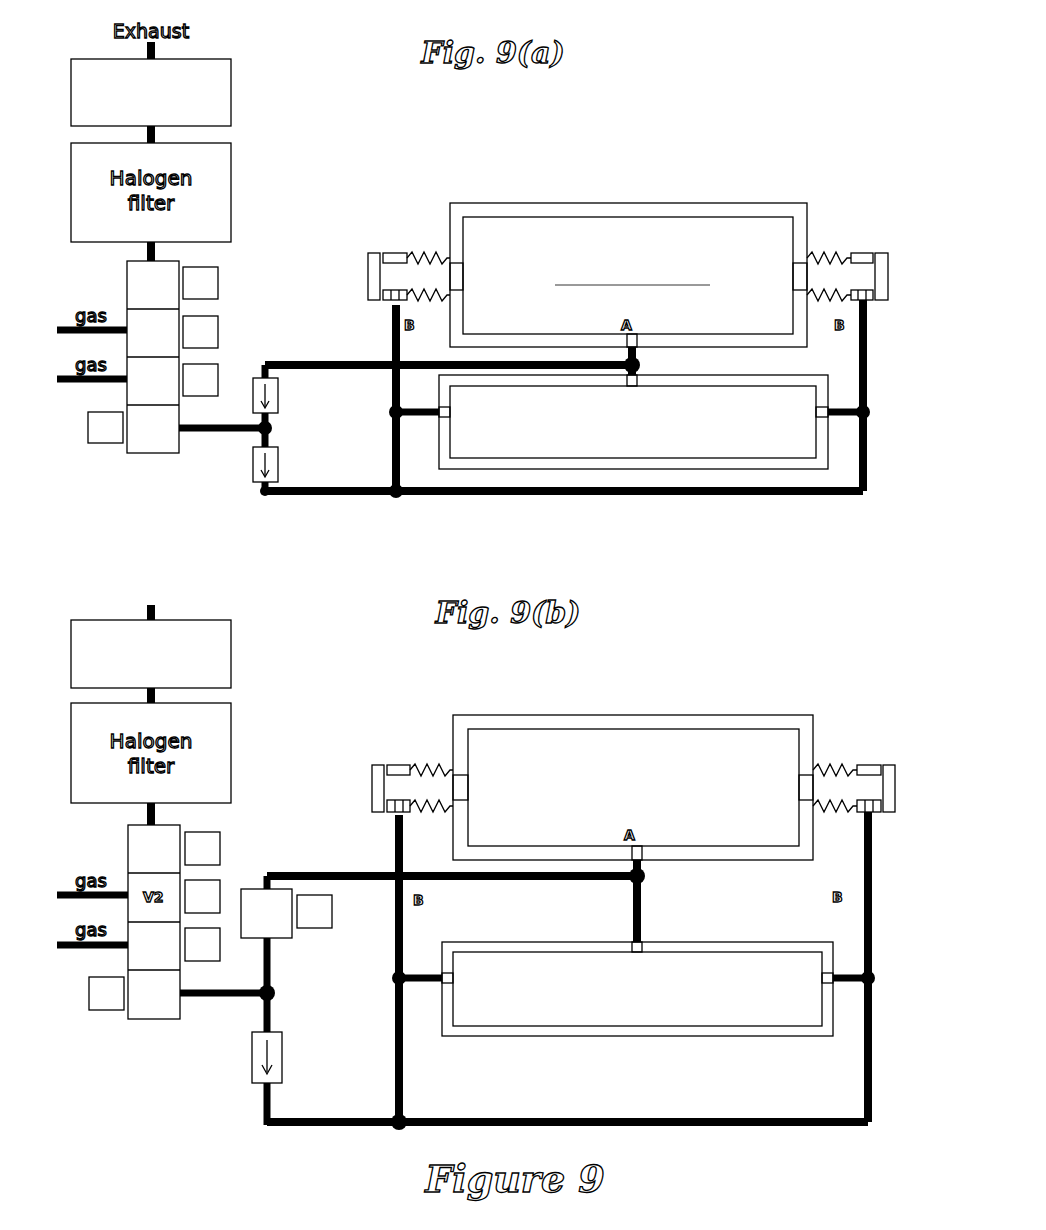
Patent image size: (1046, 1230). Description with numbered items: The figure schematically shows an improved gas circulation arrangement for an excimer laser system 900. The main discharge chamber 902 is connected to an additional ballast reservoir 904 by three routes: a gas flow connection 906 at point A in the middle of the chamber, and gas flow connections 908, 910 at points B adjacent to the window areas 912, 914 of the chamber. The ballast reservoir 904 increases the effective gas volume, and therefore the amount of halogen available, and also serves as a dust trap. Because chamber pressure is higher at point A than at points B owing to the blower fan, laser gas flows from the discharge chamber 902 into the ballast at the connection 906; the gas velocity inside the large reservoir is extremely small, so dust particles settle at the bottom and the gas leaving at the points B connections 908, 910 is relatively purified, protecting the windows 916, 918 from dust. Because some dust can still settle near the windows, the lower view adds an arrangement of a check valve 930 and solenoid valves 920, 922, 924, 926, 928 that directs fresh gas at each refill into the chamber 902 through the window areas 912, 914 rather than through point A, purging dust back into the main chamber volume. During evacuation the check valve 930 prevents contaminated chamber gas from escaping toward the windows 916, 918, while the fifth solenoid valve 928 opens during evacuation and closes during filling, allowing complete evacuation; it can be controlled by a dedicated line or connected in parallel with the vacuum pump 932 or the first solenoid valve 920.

In FIG. 9A, the excimer laser system 900 is at (633, 104).
In FIG. 9A, the main discharge chamber 902 is at (658, 236).
In FIG. 9B, the main discharge chamber 902 is at (665, 747).
In FIG. 9A, the ballast reservoir 904 is at (740, 447).
In FIG. 9B, the ballast reservoir 904 is at (763, 996).
In FIG. 9A, the gas flow connection at point A 906 is at (634, 318).
In FIG. 9B, the gas flow connection at point A 906 is at (639, 836).
In FIG. 9A, the gas flow connection at point B 908 is at (888, 307).
In FIG. 9B, the gas flow connection at point B 908 is at (882, 820).
In FIG. 9A, the gas flow connection at point B 910 is at (370, 326).
In FIG. 9B, the gas flow connection at point B 910 is at (385, 828).
In FIG. 9A, the window area 912 is at (820, 258).
In FIG. 9B, the window area 912 is at (830, 770).
In FIG. 9A, the window area 914 is at (432, 262).
In FIG. 9B, the window area 914 is at (432, 778).
In FIG. 9A, the window 916 is at (877, 255).
In FIG. 9B, the window 916 is at (876, 765).
In FIG. 9A, the window 918 is at (372, 268).
In FIG. 9B, the window 918 is at (372, 785).
In FIG. 9A, the solenoid valve V1 920 is at (153, 357).
In FIG. 9B, the solenoid valve V1 920 is at (175, 826).
In FIG. 9B, the solenoid valve 922 is at (137, 877).
In FIG. 9B, the solenoid valve 924 is at (128, 958).
In FIG. 9B, the solenoid valve 926 is at (130, 998).
In FIG. 9B, the solenoid valve V5 928 is at (276, 926).
In FIG. 9B, the check valve 930 is at (258, 1060).
In FIG. 9A, the vacuum pump 932 is at (151, 92).
In FIG. 9B, the vacuum pump 932 is at (232, 665).